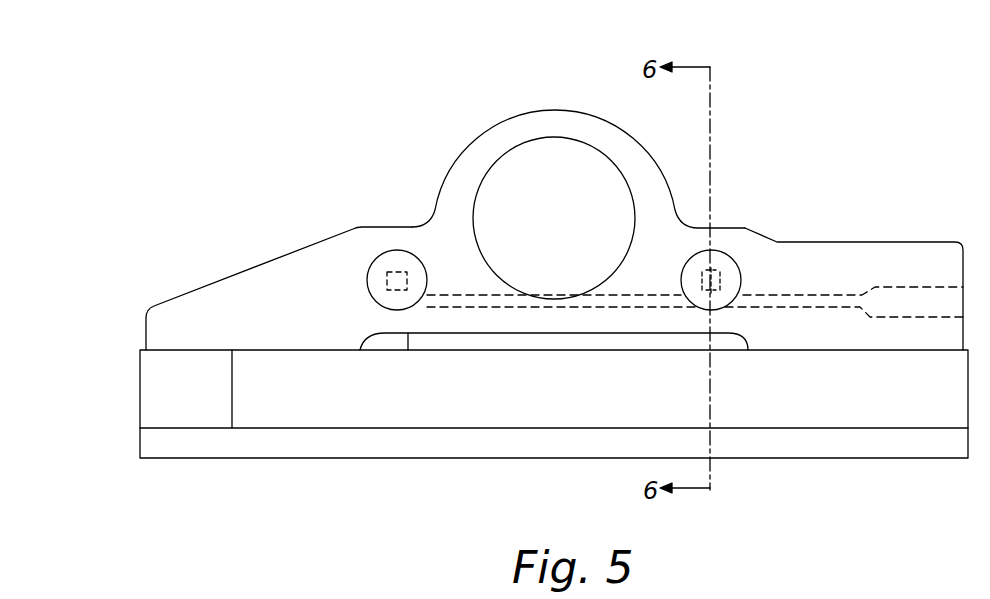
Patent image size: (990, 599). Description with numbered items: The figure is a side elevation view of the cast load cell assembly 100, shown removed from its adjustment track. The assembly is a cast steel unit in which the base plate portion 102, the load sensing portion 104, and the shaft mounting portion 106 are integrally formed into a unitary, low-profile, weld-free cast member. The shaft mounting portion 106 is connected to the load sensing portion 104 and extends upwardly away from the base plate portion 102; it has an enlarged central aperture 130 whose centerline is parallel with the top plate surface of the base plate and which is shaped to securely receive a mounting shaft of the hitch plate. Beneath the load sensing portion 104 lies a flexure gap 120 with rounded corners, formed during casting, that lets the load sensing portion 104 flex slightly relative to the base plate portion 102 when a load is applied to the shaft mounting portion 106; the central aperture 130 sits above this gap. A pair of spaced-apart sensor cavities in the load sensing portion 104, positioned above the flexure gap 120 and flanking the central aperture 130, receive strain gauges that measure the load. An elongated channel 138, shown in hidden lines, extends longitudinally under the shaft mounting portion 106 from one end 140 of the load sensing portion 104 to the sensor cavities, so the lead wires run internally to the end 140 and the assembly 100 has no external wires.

The cast load cell assembly 100 is at (340, 92).
The base plate portion 102 is at (198, 420).
The load sensing portion 104 is at (198, 300).
The shaft mounting portion 106 is at (501, 118).
The flexure gap 120 is at (515, 342).
The central aperture 130 is at (555, 172).
The elongated channel 138 is at (788, 298).
The end 140 is at (948, 332).